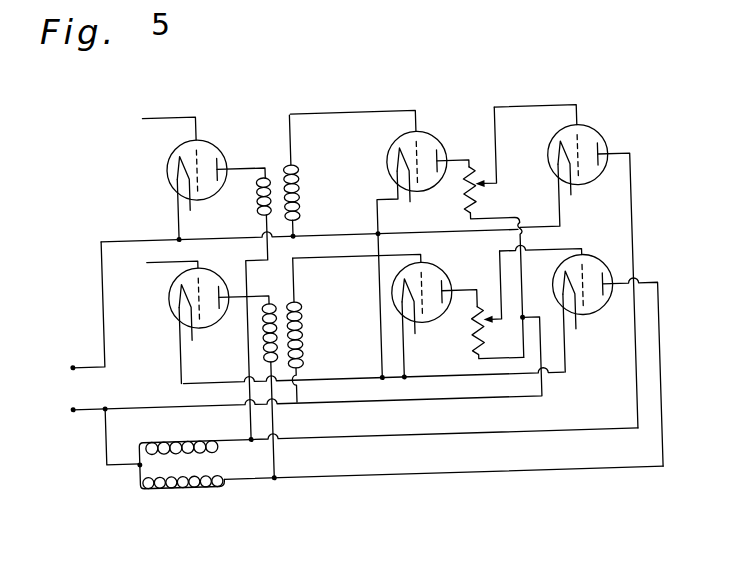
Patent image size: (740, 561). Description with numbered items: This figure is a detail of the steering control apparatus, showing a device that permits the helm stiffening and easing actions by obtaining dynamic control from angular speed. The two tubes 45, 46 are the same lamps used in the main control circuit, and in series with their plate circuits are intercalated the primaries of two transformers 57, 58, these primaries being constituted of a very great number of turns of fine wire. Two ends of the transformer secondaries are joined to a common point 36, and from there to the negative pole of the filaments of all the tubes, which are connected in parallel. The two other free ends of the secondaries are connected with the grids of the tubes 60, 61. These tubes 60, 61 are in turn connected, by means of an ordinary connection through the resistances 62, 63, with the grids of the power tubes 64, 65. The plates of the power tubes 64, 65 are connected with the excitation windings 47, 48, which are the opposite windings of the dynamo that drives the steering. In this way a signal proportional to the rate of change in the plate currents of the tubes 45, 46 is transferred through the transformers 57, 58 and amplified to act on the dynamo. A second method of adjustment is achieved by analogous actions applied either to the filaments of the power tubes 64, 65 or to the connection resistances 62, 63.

The common point 36 is at (81, 306).
The tube 45 is at (212, 137).
The tube 46 is at (216, 263).
The excitation winding of the dynamo 47 is at (194, 424).
The excitation winding of the dynamo 48 is at (197, 488).
The transformer 57 is at (271, 167).
The transformer 58 is at (283, 294).
The tube 60 is at (442, 136).
The tube 61 is at (448, 270).
The connection resistance 62 is at (463, 202).
The connection resistance 63 is at (469, 333).
The power tube 64 is at (602, 134).
The power tube 65 is at (599, 262).